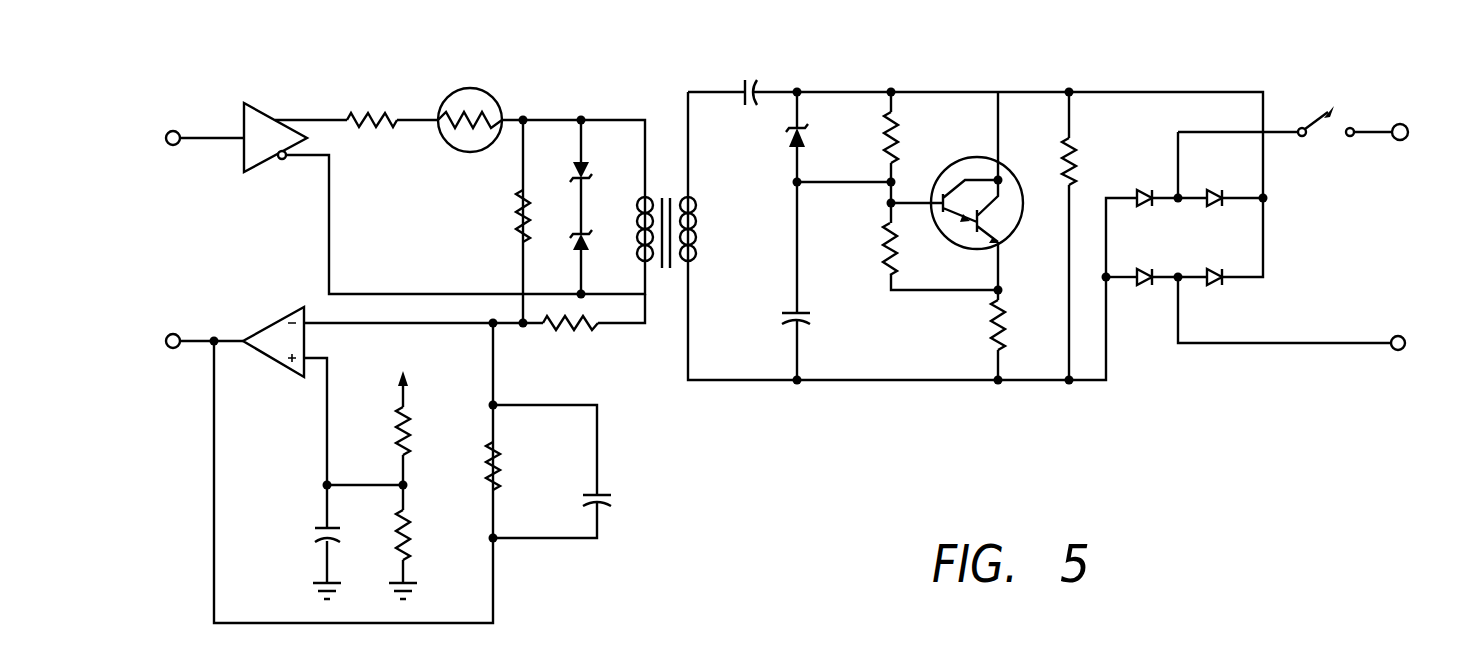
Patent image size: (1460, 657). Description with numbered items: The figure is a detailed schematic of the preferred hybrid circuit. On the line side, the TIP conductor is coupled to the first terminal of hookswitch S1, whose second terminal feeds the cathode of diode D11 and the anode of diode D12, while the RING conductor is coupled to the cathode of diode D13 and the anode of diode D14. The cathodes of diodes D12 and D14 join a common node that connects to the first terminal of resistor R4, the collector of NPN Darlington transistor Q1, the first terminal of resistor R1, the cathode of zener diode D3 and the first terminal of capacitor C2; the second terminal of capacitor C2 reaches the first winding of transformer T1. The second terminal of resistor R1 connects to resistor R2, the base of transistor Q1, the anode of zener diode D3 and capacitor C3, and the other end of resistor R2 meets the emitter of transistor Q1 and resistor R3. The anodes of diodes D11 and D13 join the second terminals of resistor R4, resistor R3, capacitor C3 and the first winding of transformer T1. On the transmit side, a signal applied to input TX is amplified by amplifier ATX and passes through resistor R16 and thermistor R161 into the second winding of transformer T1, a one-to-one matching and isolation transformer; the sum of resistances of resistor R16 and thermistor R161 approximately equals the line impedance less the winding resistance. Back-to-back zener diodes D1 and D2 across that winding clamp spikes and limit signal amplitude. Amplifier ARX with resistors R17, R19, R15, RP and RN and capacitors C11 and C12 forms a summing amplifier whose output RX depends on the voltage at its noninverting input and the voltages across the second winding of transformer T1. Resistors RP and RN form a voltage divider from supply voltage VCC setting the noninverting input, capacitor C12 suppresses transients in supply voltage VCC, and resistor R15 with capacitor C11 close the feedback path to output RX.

The input TX is at (158, 138).
The output RX is at (156, 340).
The TIP conductor TIP is at (1421, 133).
The RING conductor RING is at (1424, 344).
The supply voltage VCC is at (404, 361).
The amplifier ATX is at (266, 101).
The resistor R16 is at (378, 115).
The thermistor R161 is at (482, 88).
The resistor R17 is at (517, 212).
The zener diode D1 is at (574, 181).
The zener diode D2 is at (574, 251).
The transformer T1 is at (665, 196).
The resistor R19 is at (567, 331).
The amplifier ARX is at (292, 304).
The capacitor C12 is at (316, 525).
The resistor RP is at (412, 418).
The resistor RN is at (412, 523).
The resistor R15 is at (500, 453).
The capacitor C11 is at (604, 493).
The capacitor C2 is at (758, 80).
The zener diode D3 is at (792, 148).
The capacitor C3 is at (784, 313).
The resistor R1 is at (884, 130).
The resistor R2 is at (883, 240).
The resistor R3 is at (990, 322).
The NPN Darlington transistor Q1 is at (986, 157).
The resistor R4 is at (1078, 151).
The hookswitch S1 is at (1303, 126).
The diode D11 is at (1146, 206).
The diode D12 is at (1216, 206).
The diode D13 is at (1146, 285).
The diode D14 is at (1216, 285).